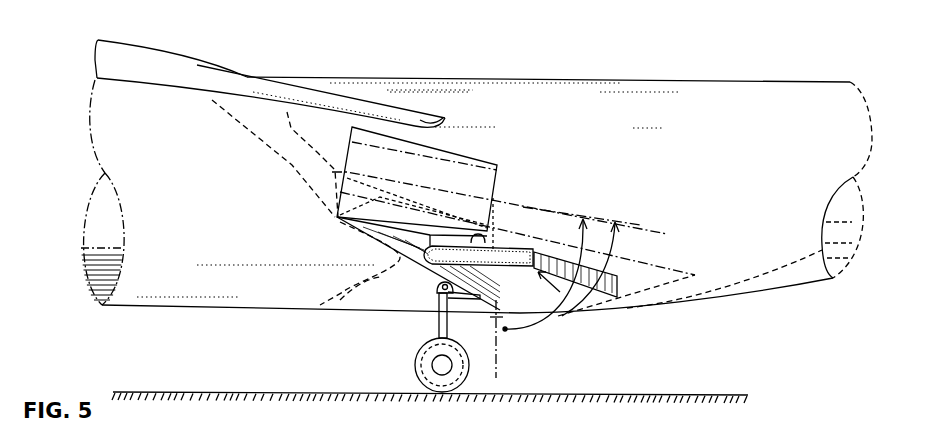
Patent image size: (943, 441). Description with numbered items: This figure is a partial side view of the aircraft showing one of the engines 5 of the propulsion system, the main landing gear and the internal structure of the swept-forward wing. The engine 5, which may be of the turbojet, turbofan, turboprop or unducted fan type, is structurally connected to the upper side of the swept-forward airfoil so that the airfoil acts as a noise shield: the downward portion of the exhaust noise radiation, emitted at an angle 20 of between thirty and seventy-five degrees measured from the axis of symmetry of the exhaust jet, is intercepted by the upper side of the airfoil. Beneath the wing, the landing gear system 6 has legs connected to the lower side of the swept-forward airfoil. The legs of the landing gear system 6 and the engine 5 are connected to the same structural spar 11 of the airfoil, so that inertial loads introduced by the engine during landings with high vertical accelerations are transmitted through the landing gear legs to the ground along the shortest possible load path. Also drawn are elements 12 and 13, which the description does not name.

The engine 5 is at (420, 167).
The landing gear system 6 is at (437, 323).
The structural spar 11 is at (430, 262).
The ramp 12 is at (557, 212).
The support box 13 is at (511, 246).
The angle 20 is at (561, 284).